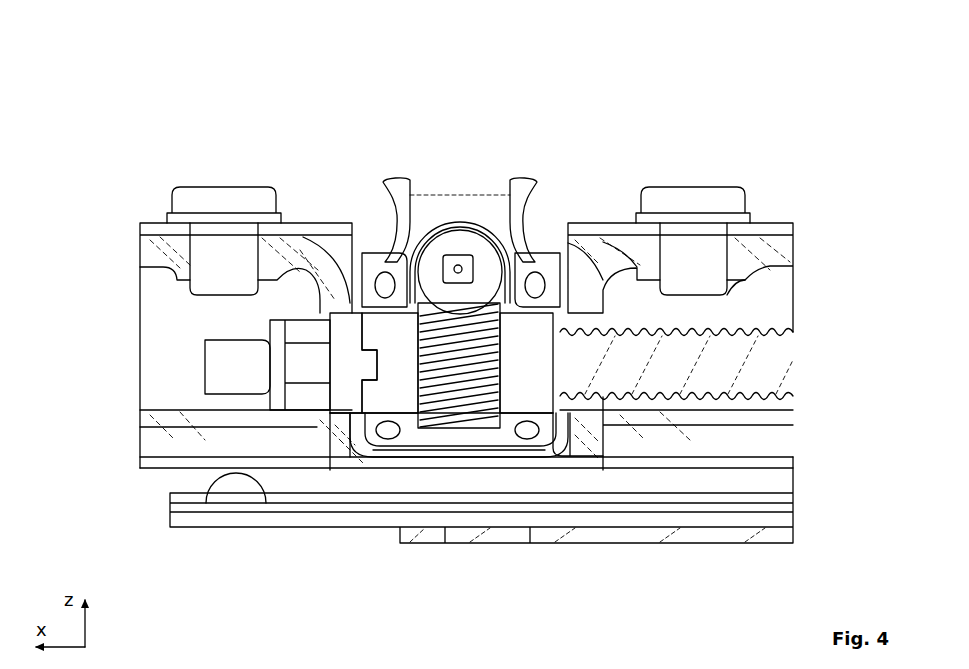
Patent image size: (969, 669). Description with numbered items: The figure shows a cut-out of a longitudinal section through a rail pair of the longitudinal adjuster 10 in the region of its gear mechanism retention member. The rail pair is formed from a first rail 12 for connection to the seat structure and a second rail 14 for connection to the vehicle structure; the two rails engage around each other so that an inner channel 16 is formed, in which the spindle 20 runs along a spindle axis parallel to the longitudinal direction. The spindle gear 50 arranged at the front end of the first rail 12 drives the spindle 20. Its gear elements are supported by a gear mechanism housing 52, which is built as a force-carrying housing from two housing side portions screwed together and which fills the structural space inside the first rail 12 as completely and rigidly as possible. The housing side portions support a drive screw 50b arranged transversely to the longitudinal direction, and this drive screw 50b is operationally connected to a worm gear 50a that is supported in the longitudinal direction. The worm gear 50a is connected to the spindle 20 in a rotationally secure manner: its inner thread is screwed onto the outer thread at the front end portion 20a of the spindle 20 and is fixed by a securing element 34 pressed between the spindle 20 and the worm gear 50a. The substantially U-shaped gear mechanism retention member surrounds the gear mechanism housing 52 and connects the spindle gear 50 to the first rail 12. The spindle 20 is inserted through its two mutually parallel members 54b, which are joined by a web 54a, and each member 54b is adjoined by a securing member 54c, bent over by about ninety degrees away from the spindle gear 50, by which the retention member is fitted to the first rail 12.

The longitudinal adjuster 10 is at (155, 90).
The first rail 12 is at (623, 237).
The second rail 14 is at (693, 522).
The inner channel 16 is at (727, 297).
The spindle 20 is at (732, 352).
The front end portion of the spindle 20a is at (198, 371).
The securing element 34 is at (305, 362).
The spindle gear 50 is at (430, 155).
The worm gear 50a is at (407, 397).
The drive screw 50b is at (443, 248).
The gear mechanism housing 52 is at (497, 220).
The web 54a is at (513, 468).
The member 54b is at (330, 428).
The securing member 54c is at (172, 253).